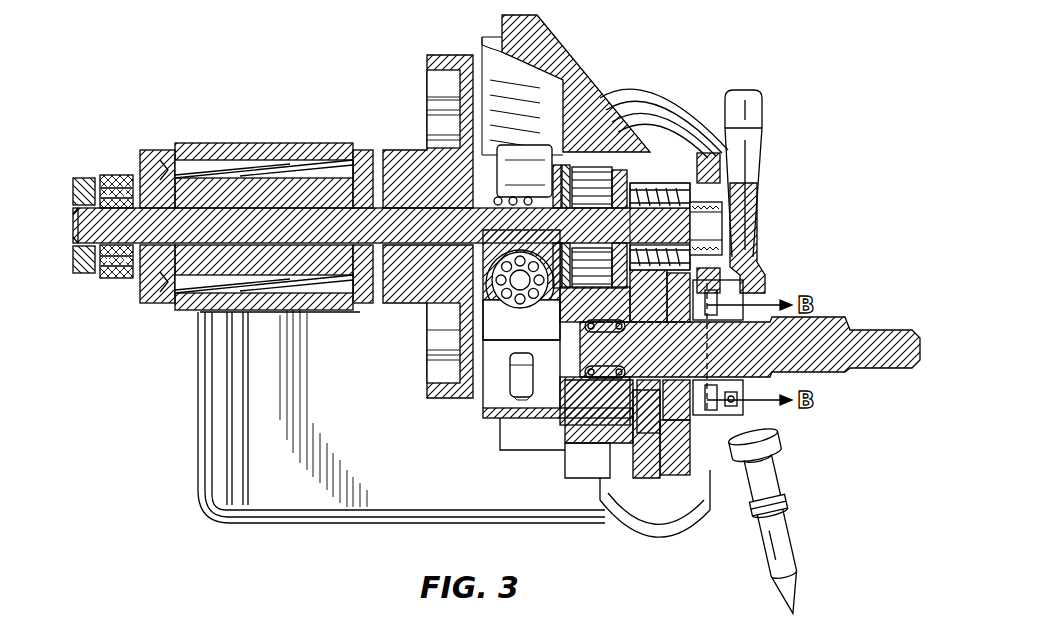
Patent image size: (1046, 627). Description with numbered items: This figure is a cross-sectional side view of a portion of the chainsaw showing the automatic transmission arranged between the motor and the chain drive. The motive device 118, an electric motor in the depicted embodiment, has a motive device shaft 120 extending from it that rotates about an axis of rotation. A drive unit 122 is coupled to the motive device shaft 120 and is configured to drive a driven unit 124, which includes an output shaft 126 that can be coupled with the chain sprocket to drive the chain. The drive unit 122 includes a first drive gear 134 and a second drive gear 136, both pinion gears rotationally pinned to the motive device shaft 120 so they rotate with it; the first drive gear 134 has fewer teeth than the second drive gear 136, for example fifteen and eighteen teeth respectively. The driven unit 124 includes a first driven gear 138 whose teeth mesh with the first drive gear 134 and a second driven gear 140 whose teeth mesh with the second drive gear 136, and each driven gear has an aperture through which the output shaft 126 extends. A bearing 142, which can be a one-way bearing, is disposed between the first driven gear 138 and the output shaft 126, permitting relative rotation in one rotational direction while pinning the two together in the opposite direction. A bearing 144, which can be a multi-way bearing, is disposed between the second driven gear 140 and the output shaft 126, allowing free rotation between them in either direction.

The motive device 118 is at (248, 168).
The motive device shaft 120 is at (415, 218).
The drive unit 122 is at (728, 212).
The driven unit 124 is at (677, 435).
The output shaft 126 is at (882, 338).
The first drive gear 134 is at (660, 200).
The second drive gear 136 is at (685, 200).
The first driven gear 138 is at (650, 425).
The second driven gear 140 is at (762, 497).
The bearing 142 is at (640, 392).
The bearing 144 is at (752, 441).